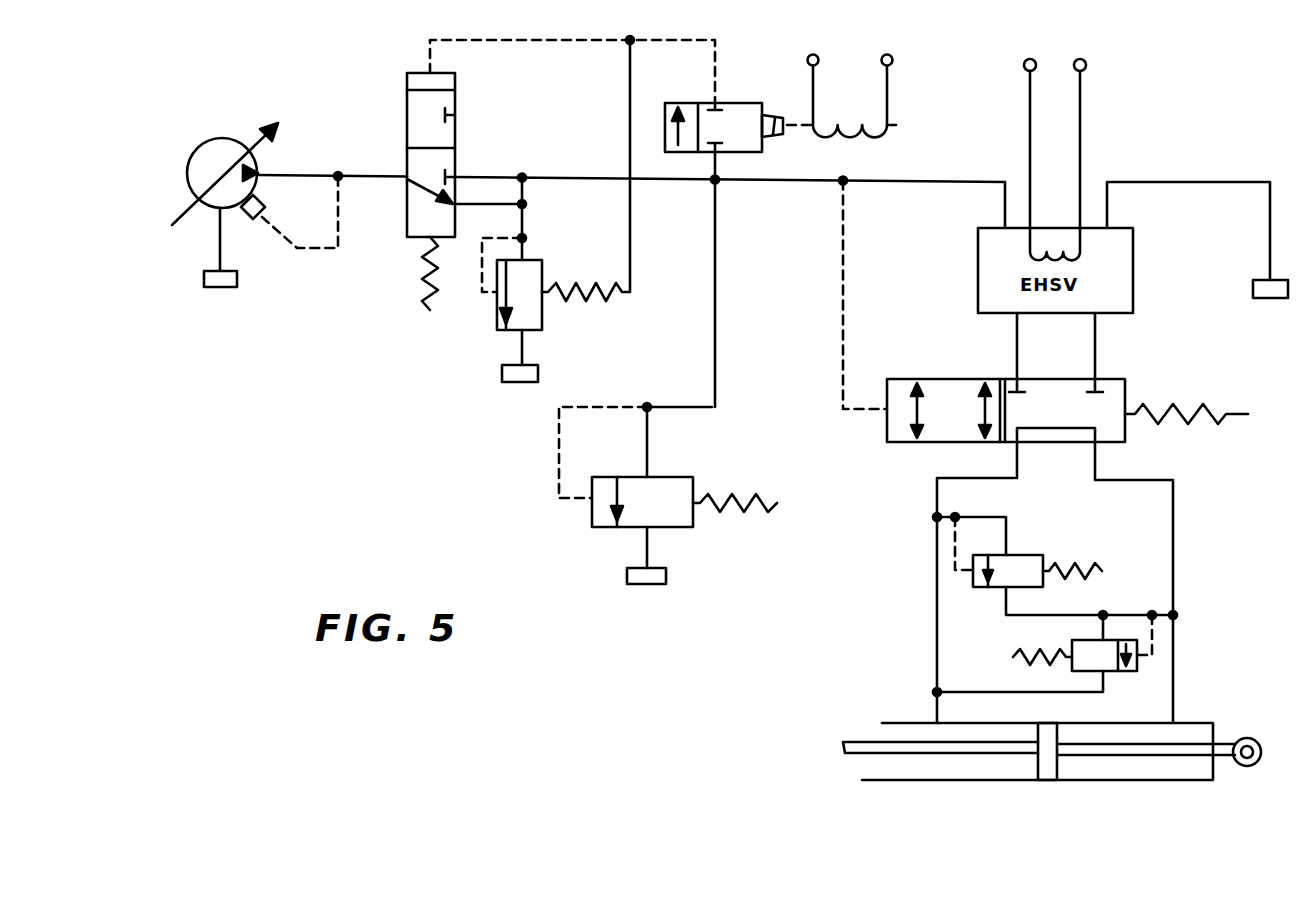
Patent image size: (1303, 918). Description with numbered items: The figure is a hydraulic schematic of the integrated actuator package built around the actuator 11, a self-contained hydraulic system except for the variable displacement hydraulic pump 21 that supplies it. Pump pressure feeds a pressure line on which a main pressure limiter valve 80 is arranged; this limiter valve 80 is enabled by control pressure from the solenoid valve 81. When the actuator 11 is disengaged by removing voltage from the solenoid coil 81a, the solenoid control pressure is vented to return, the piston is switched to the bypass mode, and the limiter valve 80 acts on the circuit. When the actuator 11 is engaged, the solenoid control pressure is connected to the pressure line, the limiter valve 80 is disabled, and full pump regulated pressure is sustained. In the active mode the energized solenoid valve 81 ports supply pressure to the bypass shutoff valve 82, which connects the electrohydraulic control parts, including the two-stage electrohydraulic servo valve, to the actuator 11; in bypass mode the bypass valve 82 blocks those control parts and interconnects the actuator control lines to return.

The variable displacement hydraulic pump 21 is at (199, 164).
The main pressure limiter valve 80 is at (591, 263).
The solenoid valve 81 is at (780, 89).
The solenoid coil 81a is at (866, 113).
The bypass shutoff valve 82 is at (1117, 393).
The actuator 11 is at (905, 730).